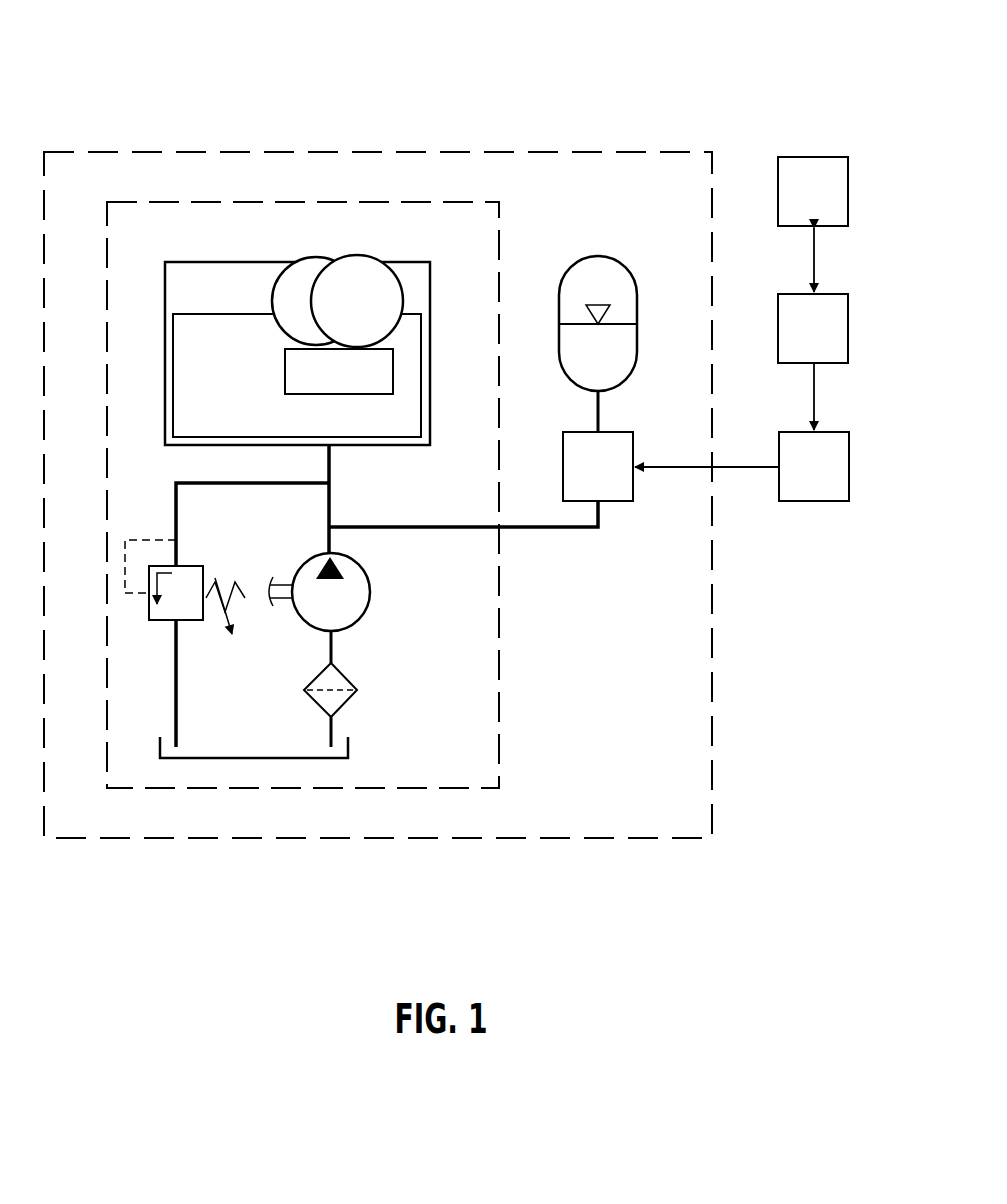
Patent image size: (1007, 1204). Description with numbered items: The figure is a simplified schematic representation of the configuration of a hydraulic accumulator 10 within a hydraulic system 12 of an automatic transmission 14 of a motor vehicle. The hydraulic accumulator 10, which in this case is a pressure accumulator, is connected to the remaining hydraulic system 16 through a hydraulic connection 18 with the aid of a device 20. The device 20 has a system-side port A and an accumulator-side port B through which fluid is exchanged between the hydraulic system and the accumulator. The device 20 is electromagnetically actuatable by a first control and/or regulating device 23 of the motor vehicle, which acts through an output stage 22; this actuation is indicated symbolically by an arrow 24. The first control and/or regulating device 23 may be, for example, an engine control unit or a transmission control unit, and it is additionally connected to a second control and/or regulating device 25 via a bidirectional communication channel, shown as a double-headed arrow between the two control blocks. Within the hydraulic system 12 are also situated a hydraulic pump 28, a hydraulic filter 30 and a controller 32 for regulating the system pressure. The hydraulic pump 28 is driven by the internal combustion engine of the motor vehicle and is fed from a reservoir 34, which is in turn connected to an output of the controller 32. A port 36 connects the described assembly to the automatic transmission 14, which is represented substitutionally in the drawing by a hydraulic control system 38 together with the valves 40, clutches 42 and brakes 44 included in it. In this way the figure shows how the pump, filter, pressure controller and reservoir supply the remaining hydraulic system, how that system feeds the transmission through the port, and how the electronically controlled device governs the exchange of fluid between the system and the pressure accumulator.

The hydraulic accumulator 10 is at (625, 263).
The hydraulic system 12 is at (148, 152).
The automatic transmission 14 is at (218, 278).
The remaining hydraulic system 16 is at (428, 202).
The hydraulic connection 18 is at (440, 530).
The device 20 is at (620, 487).
The output stage 22 is at (817, 487).
The first control and/or regulating device 23 is at (790, 318).
The arrow 24 is at (748, 466).
The second control and/or regulating device 25 is at (815, 168).
The hydraulic pump 28 is at (307, 627).
The hydraulic filter 30 is at (347, 705).
The controller 32 is at (159, 565).
The reservoir 34 is at (253, 758).
The port 36 is at (338, 452).
The hydraulic control system 38 is at (378, 415).
The valves 40 is at (378, 373).
The clutches 42 is at (305, 268).
The brakes 44 is at (357, 270).
The system-side port A is at (609, 508).
The accumulator-side port B is at (610, 424).